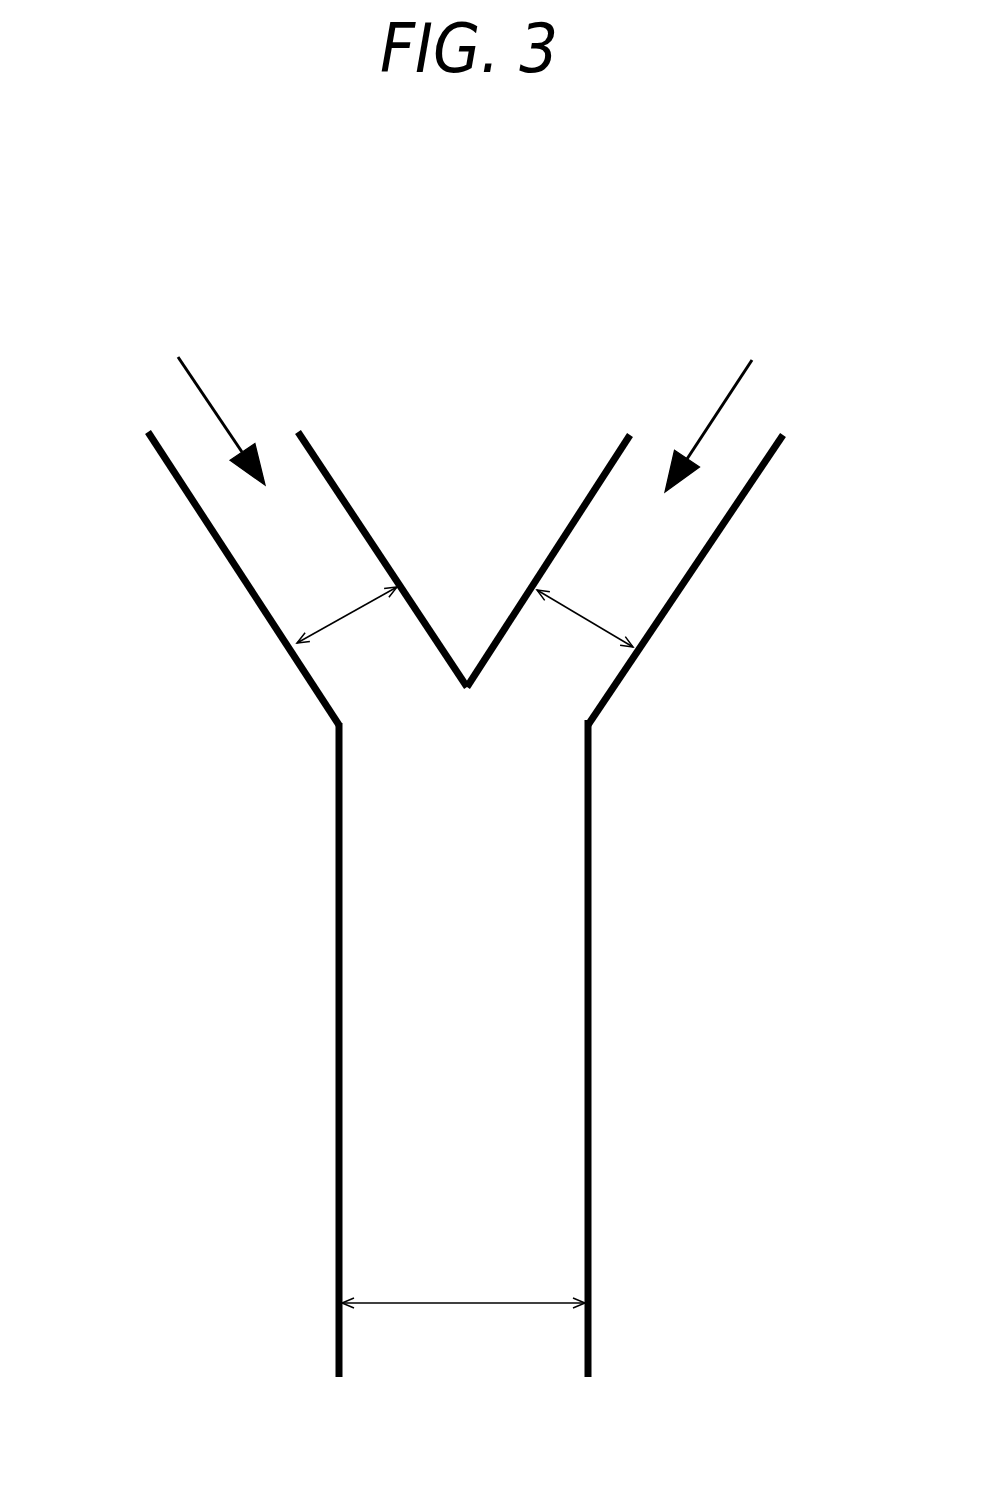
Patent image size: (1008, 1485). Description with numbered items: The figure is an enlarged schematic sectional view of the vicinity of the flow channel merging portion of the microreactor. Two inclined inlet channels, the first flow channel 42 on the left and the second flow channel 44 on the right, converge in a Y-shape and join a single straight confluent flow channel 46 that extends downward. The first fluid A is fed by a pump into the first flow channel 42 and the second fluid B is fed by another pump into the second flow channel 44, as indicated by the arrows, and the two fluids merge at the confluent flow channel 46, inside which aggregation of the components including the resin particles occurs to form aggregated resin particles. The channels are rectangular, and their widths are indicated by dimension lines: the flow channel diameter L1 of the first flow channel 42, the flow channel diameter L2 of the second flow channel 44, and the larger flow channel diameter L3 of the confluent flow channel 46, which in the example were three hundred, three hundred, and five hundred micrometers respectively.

The first flow channel 42 is at (277, 570).
The second flow channel 44 is at (645, 570).
The confluent flow channel 46 is at (423, 1075).
The first fluid A is at (203, 382).
The second fluid B is at (735, 387).
The flow channel diameter of the first flow channel L1 is at (345, 613).
The flow channel diameter of the second flow channel L2 is at (585, 623).
The flow channel diameter of the confluent flow channel L3 is at (472, 1302).